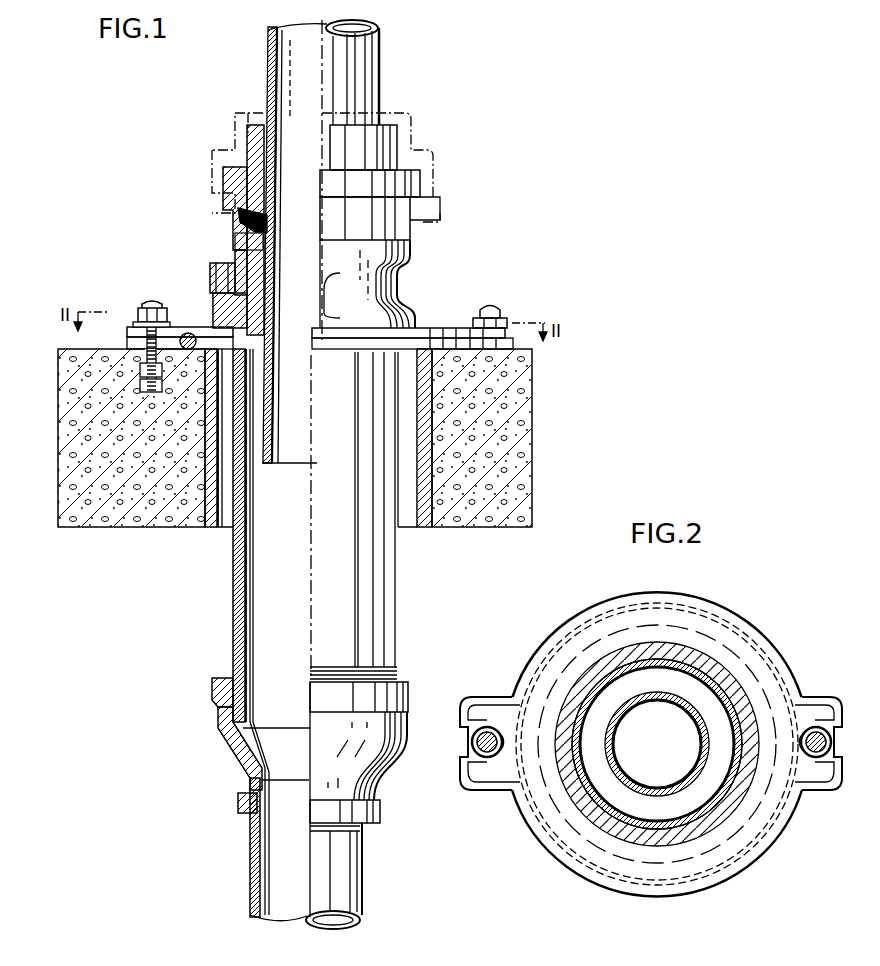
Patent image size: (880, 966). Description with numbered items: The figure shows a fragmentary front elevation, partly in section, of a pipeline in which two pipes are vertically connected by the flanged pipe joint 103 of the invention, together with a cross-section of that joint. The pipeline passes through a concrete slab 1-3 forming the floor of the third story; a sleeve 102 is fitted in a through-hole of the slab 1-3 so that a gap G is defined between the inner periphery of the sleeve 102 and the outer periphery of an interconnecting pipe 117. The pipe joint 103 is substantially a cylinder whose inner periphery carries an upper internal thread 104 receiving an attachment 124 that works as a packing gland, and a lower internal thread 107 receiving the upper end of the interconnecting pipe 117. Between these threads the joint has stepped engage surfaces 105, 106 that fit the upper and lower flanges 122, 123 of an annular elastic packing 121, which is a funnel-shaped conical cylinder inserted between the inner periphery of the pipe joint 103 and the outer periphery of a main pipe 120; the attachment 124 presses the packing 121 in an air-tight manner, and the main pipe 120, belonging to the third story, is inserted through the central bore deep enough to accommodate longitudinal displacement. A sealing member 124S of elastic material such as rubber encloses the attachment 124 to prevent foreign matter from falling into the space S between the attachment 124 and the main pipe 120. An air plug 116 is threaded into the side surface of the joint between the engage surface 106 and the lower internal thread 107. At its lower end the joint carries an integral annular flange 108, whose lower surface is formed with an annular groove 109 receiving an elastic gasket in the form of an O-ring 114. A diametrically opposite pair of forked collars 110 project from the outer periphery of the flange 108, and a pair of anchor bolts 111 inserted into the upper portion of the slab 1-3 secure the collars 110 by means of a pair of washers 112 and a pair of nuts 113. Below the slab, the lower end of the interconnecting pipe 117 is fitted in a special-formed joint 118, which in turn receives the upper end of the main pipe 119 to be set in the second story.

In FIG. 1, the main pipe 120 is at (268, 54).
In FIG. 2, the main pipe 120 is at (682, 792).
In FIG. 1, the attachment 124 is at (262, 124).
In FIG. 1, the sealing member 124S is at (410, 159).
In FIG. 1, the upper internal thread 104 is at (236, 150).
In FIG. 1, the flanged pipe joint 103 is at (210, 165).
In FIG. 1, the upper flange 122 is at (237, 200).
In FIG. 1, the engage surface 105 is at (241, 214).
In FIG. 1, the elastic packing 121 is at (248, 232).
In FIG. 1, the lower flange 123 is at (250, 250).
In FIG. 1, the engage surface 106 is at (277, 261).
In FIG. 1, the air plug 116 is at (214, 282).
In FIG. 1, the lower internal thread 107 is at (222, 318).
In FIG. 1, the annular flange 108 is at (178, 327).
In FIG. 2, the annular flange 108 is at (560, 630).
In FIG. 1, the annular groove 109 is at (248, 338).
In FIG. 2, the annular groove 109 is at (542, 662).
In FIG. 1, the O-ring 114 is at (262, 372).
In FIG. 1, the washers 112 is at (139, 316).
In FIG. 1, the nuts 113 is at (146, 305).
In FIG. 2, the nuts 113 is at (487, 760).
In FIG. 1, the anchor bolts 111 is at (146, 365).
In FIG. 1, the forked collars 110 is at (127, 338).
In FIG. 2, the forked collars 110 is at (486, 706).
In FIG. 1, the concrete slab 1-3 is at (86, 526).
In FIG. 1, the sleeve 102 is at (218, 527).
In FIG. 1, the interconnecting pipe 117 is at (233, 613).
In FIG. 2, the interconnecting pipe 117 is at (645, 823).
In FIG. 1, the special-formed joint 118 is at (240, 766).
In FIG. 1, the main pipe 119 is at (252, 866).
In FIG. 1, the space S is at (266, 136).
In FIG. 1, the gap G is at (255, 478).